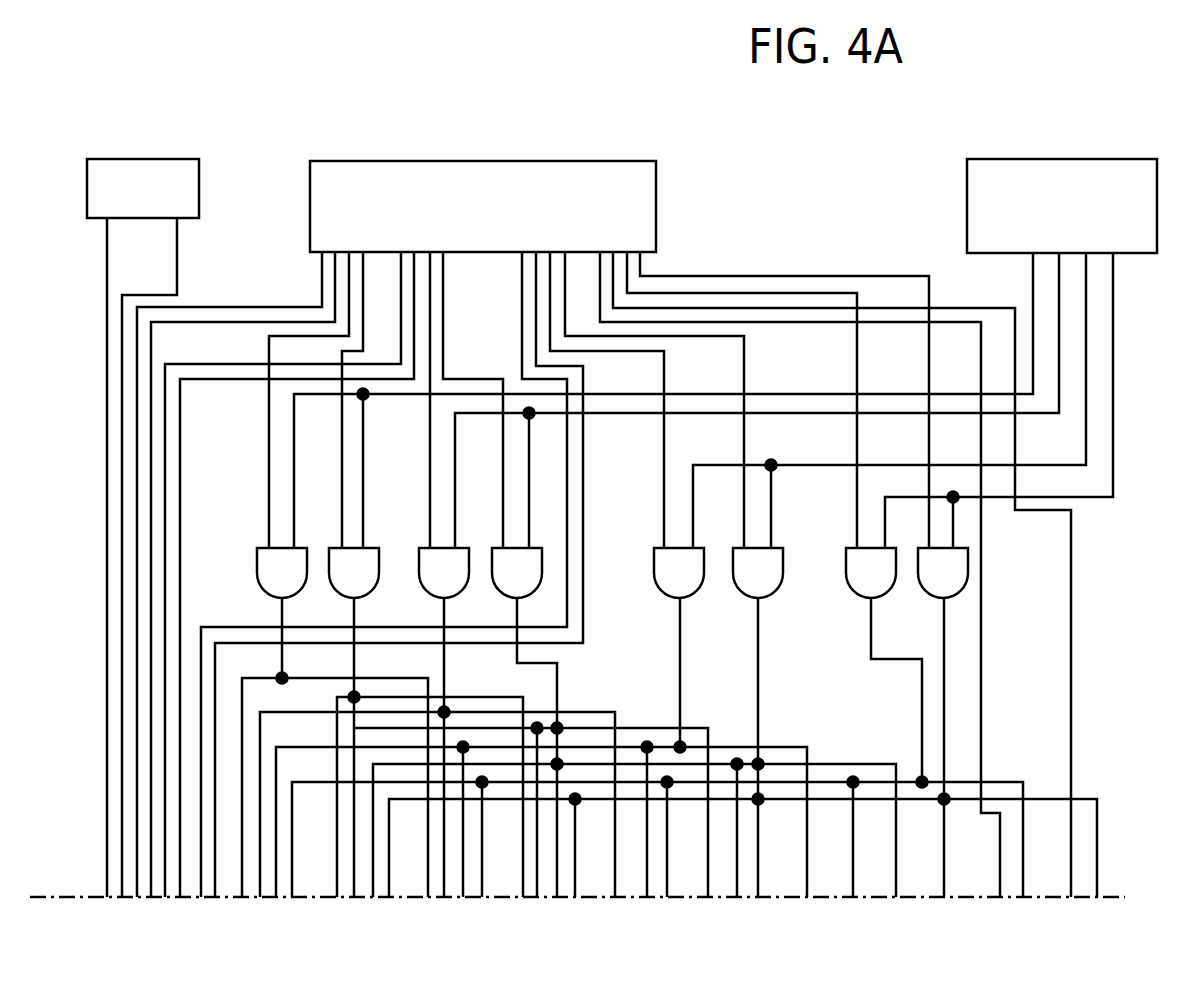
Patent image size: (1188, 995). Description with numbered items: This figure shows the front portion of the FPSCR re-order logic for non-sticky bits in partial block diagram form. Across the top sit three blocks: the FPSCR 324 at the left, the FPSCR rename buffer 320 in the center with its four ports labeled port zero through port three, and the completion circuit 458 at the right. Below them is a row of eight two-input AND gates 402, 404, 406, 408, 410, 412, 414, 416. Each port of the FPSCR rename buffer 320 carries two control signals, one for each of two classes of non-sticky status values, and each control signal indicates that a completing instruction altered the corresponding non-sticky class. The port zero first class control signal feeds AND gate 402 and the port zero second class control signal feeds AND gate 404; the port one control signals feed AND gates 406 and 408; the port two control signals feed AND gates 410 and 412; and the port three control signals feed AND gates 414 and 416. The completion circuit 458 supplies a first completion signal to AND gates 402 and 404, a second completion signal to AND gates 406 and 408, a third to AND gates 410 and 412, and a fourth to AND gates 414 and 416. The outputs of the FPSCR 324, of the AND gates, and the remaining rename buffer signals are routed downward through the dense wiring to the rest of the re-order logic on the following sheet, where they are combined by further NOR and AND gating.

The FPSCR 324 is at (175, 158).
The FPSCR rename buffer 320 is at (565, 158).
The completion circuit 458 is at (1095, 158).
The AND gate 402 is at (258, 545).
The AND gate 404 is at (378, 545).
The AND gate 406 is at (418, 575).
The AND gate 408 is at (492, 582).
The AND gate 410 is at (655, 553).
The AND gate 412 is at (734, 587).
The AND gate 414 is at (846, 555).
The AND gate 416 is at (925, 593).